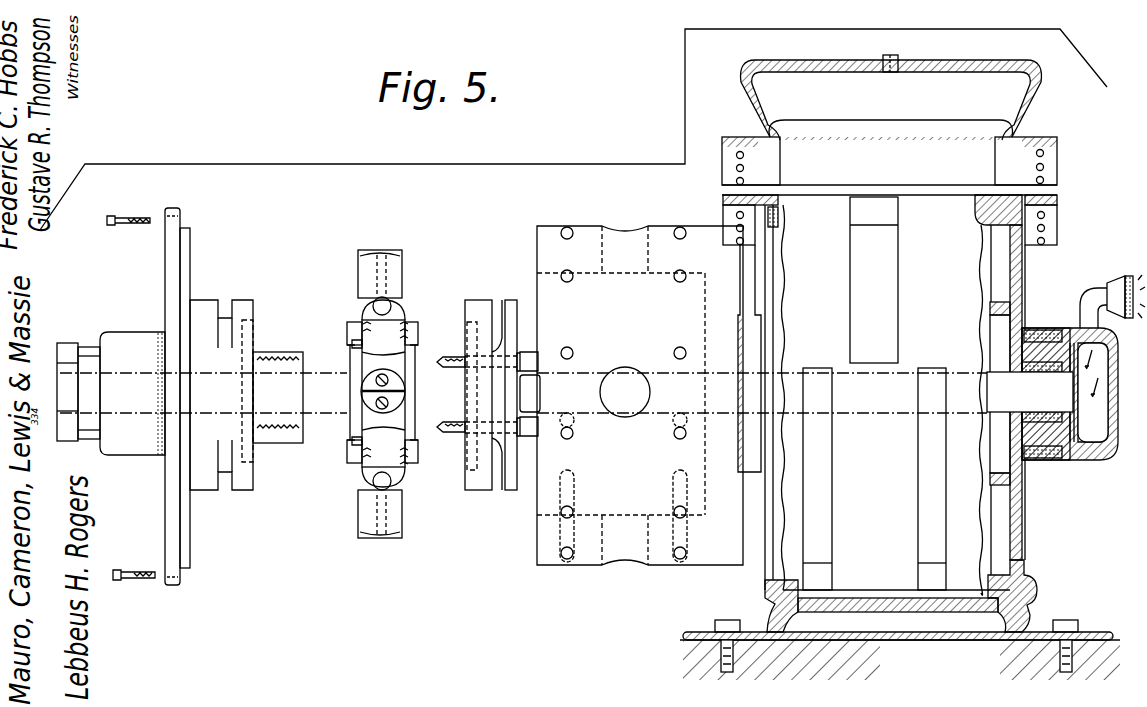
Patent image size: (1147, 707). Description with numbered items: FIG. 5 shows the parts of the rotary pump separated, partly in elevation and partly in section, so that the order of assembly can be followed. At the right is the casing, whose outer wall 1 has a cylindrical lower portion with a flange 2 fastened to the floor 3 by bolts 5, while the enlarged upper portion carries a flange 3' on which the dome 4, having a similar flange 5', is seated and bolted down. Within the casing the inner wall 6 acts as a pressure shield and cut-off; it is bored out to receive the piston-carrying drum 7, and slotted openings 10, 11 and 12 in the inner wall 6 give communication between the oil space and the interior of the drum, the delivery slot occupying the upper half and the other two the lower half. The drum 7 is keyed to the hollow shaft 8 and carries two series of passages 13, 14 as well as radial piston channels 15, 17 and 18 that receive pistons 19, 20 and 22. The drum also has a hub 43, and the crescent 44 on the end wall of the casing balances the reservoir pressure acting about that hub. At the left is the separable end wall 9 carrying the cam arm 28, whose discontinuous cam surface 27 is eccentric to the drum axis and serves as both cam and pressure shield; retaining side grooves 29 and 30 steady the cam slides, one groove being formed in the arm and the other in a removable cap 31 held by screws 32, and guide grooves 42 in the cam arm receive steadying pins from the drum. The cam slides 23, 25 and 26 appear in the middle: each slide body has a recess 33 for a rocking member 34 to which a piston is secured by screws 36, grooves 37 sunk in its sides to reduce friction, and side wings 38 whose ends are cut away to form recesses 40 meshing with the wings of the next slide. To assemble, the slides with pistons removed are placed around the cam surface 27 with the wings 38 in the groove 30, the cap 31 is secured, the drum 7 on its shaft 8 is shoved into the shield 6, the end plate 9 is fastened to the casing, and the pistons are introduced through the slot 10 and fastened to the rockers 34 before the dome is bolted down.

The outer wall 1 is at (1030, 316).
The flange 2 is at (690, 632).
The floor 3 is at (884, 671).
The flange 3' is at (903, 220).
The dome 4 is at (960, 70).
The bolts 5 is at (897, 631).
The upper flange 5' is at (903, 159).
The inner wall 6 is at (956, 250).
The piston-carrying drum 7 is at (582, 234).
The shaft 8 is at (1010, 394).
The end wall 9 is at (165, 283).
The slotted opening 10 is at (866, 308).
The slotted opening 11 is at (828, 541).
The slotted opening 12 is at (925, 496).
The passages 13 is at (565, 229).
The passages 14 is at (690, 218).
The piston channel 15 is at (626, 530).
The piston channel 17 is at (630, 236).
The piston channel 18 is at (634, 372).
The piston 19 is at (405, 392).
The piston 20 is at (395, 528).
The piston 22 is at (393, 266).
The cam slide 23 is at (395, 474).
The cam slide 25 is at (395, 312).
The cam slide 26 is at (405, 410).
The cam surface 27 is at (297, 443).
The cam arm 28 is at (221, 395).
The retaining side groove 29 is at (258, 330).
The retaining side groove 30 is at (470, 330).
The removable cap 31 is at (478, 312).
The screws 32 is at (510, 378).
The recess 33 is at (352, 443).
The rocking member 34 is at (368, 310).
The screws 36 is at (393, 254).
The grooves 37 is at (408, 339).
The side wings 38 is at (347, 341).
The recesses 40 is at (349, 355).
The guide grooves 42 is at (222, 302).
The hub 43 is at (762, 347).
The crescent 44 is at (990, 315).